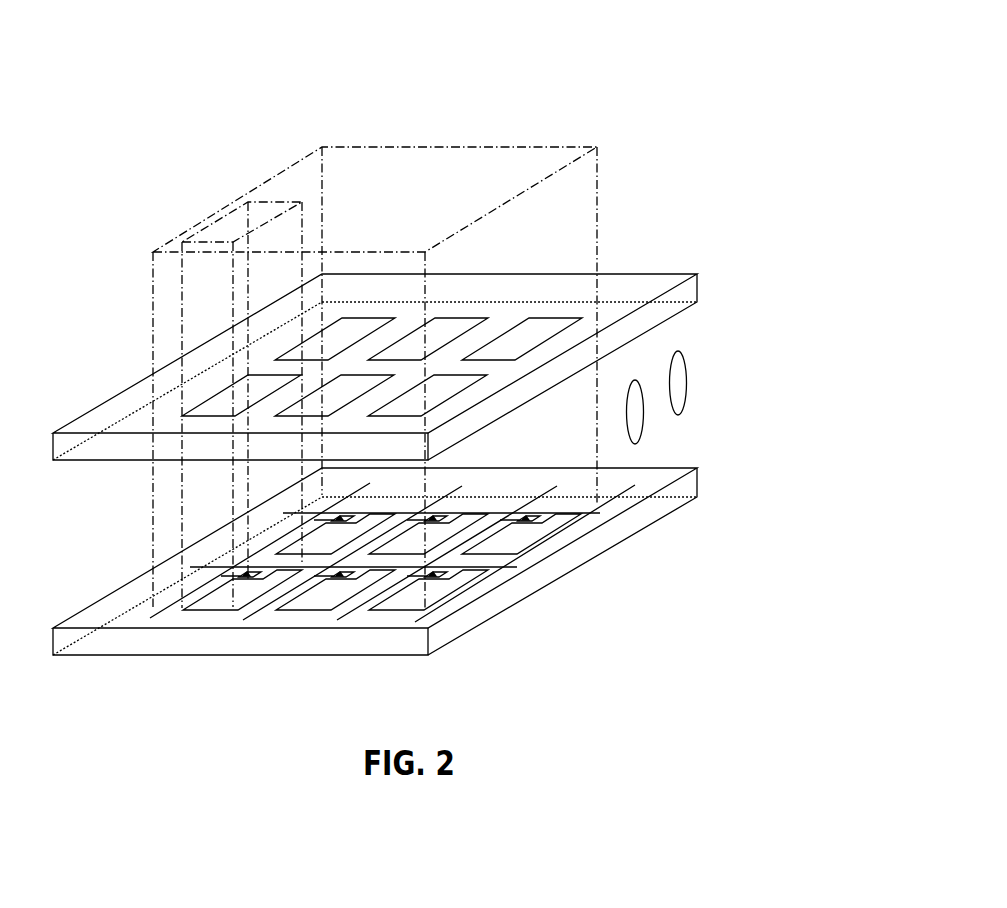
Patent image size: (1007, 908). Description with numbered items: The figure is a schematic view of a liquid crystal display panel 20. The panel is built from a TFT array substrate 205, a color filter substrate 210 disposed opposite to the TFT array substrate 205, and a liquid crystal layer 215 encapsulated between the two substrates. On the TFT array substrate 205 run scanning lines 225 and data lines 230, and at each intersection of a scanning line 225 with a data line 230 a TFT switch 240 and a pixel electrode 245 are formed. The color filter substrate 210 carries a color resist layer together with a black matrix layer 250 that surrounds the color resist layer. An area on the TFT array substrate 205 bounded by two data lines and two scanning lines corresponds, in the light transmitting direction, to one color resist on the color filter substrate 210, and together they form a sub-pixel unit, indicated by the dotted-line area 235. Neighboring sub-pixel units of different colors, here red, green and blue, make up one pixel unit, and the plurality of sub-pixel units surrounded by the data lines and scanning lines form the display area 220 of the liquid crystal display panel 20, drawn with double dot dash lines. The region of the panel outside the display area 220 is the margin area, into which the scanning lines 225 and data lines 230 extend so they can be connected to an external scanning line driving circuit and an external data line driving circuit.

The liquid crystal display panel 20 is at (627, 95).
The TFT array substrate 205 is at (359, 567).
The color filter substrate 210 is at (430, 344).
The liquid crystal layer 215 is at (690, 385).
The display area 220 is at (375, 163).
The scanning line 225 is at (249, 563).
The data line 230 is at (188, 592).
The sub-pixel unit 235 is at (237, 228).
The TFT switch 240 is at (447, 570).
The pixel electrode 245 is at (430, 595).
The black matrix layer 250 is at (495, 330).